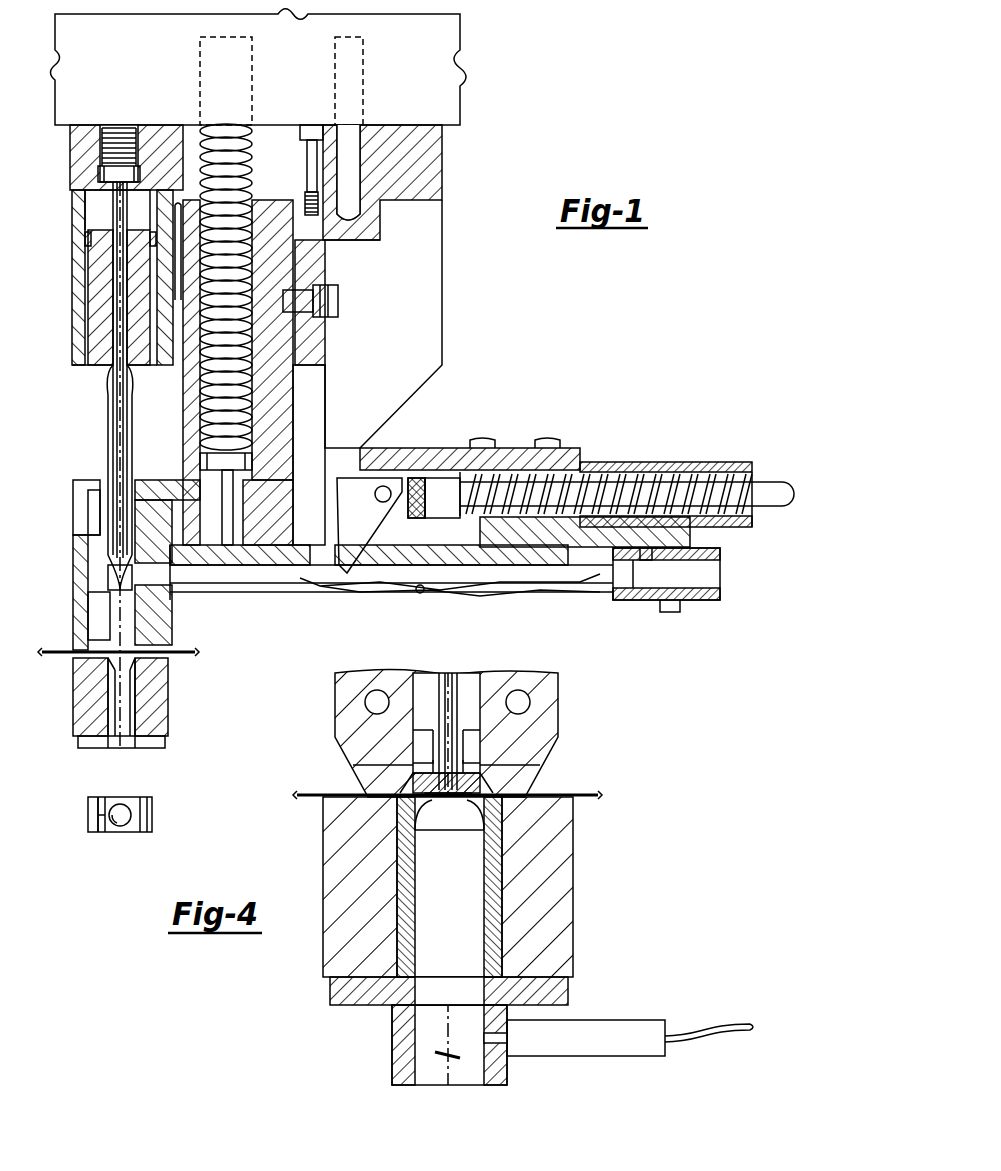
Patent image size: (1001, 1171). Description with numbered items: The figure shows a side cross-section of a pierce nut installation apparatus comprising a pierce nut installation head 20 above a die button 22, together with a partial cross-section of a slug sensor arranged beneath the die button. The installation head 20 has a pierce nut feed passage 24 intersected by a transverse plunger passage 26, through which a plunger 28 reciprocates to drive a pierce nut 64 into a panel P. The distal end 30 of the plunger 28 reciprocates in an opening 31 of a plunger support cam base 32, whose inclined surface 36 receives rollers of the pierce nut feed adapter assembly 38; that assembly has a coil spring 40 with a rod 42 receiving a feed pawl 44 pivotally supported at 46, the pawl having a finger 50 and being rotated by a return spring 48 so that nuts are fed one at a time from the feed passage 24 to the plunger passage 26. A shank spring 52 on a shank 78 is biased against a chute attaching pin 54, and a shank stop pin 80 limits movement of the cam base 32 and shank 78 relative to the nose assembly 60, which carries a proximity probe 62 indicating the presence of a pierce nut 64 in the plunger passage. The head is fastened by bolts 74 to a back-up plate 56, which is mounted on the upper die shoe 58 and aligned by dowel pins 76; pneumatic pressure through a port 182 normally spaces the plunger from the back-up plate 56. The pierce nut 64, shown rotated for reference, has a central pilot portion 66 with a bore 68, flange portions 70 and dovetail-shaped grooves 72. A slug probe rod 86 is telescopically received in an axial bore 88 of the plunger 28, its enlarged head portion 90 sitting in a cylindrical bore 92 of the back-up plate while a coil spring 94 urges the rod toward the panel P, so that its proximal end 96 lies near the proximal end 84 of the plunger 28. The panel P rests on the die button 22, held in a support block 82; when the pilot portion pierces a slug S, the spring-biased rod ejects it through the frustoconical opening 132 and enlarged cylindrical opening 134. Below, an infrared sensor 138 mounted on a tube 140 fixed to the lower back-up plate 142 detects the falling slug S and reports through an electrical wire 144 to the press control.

In FIG. 1, the pierce nut installation head 20 is at (482, 349).
In FIG. 1, the die button 22 is at (90, 693).
In FIG. 4, the die button 22 is at (505, 855).
In FIG. 1, the pierce nut feed passage 24 is at (262, 570).
In FIG. 1, the plunger passage 26 is at (134, 610).
In FIG. 1, the plunger 28 is at (108, 426).
In FIG. 4, the plunger 28 is at (436, 676).
In FIG. 1, the distal end 30 is at (90, 332).
In FIG. 1, the opening 31 is at (96, 300).
In FIG. 1, the plunger support cam base 32 is at (76, 264).
In FIG. 1, the inclined surface 36 is at (434, 376).
In FIG. 1, the pierce nut feed adapter assembly 38 is at (582, 448).
In FIG. 1, the coil spring 40 is at (652, 472).
In FIG. 1, the rod 42 is at (756, 490).
In FIG. 1, the feed pawl 44 is at (352, 559).
In FIG. 1, the pivot 46 is at (371, 490).
In FIG. 1, the return spring 48 is at (420, 515).
In FIG. 1, the finger 50 is at (414, 470).
In FIG. 1, the shank spring 52 is at (224, 140).
In FIG. 1, the chute attaching pin 54 is at (206, 480).
In FIG. 1, the back-up plate 56 is at (444, 152).
In FIG. 1, the upper die shoe 58 is at (278, 52).
In FIG. 1, the nose assembly 60 is at (72, 613).
In FIG. 4, the nose assembly 60 is at (558, 682).
In FIG. 1, the proximity probe 62 is at (91, 526).
In FIG. 1, the pierce nut 64 is at (160, 813).
In FIG. 4, the pierce nut 64 is at (415, 777).
In FIG. 1, the pilot portion 66 is at (128, 828).
In FIG. 1, the bore 68 is at (118, 822).
In FIG. 1, the flange portions 70 is at (94, 810).
In FIG. 1, the dovetail-shaped grooves 72 is at (100, 817).
In FIG. 1, the bolts 74 is at (304, 160).
In FIG. 1, the dowel pins 76 is at (344, 136).
In FIG. 1, the shank 78 is at (297, 390).
In FIG. 1, the shank stop pin 80 is at (320, 299).
In FIG. 1, the support block 82 is at (158, 692).
In FIG. 4, the support block 82 is at (555, 932).
In FIG. 1, the proximal end 84 is at (142, 562).
In FIG. 4, the proximal end 84 is at (474, 782).
In FIG. 1, the slug probe rod 86 is at (115, 390).
In FIG. 4, the slug probe rod 86 is at (454, 680).
In FIG. 1, the axial bore 88 is at (136, 408).
In FIG. 1, the enlarged head portion 90 is at (100, 174).
In FIG. 1, the cylindrical bore 92 is at (103, 137).
In FIG. 1, the coil spring 94 is at (127, 126).
In FIG. 1, the proximal end 96 is at (108, 577).
In FIG. 4, the proximal end 96 is at (480, 794).
In FIG. 4, the opening 132 is at (432, 803).
In FIG. 4, the enlarged cylindrical opening 134 is at (430, 895).
In FIG. 4, the infrared sensor 138 is at (638, 1020).
In FIG. 4, the tube 140 is at (392, 1052).
In FIG. 1, the back-up plate 142 is at (160, 748).
In FIG. 4, the back-up plate 142 is at (330, 990).
In FIG. 4, the electrical wire 144 is at (725, 1022).
In FIG. 1, the port 182 is at (80, 244).
In FIG. 1, the panel P is at (200, 652).
In FIG. 4, the panel P is at (597, 795).
In FIG. 4, the slug S is at (444, 1050).